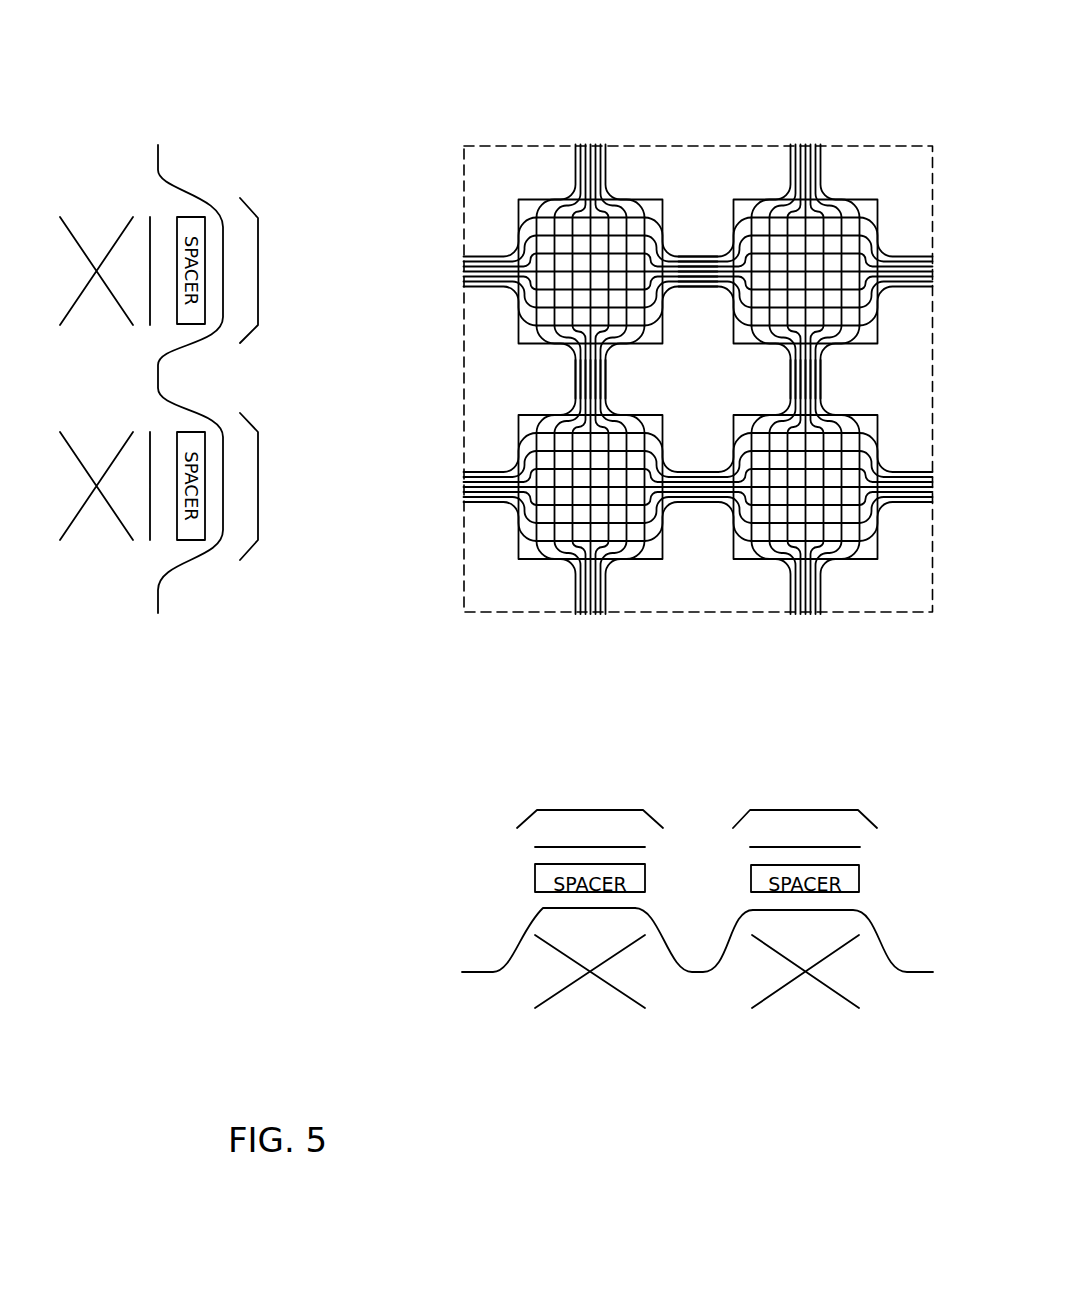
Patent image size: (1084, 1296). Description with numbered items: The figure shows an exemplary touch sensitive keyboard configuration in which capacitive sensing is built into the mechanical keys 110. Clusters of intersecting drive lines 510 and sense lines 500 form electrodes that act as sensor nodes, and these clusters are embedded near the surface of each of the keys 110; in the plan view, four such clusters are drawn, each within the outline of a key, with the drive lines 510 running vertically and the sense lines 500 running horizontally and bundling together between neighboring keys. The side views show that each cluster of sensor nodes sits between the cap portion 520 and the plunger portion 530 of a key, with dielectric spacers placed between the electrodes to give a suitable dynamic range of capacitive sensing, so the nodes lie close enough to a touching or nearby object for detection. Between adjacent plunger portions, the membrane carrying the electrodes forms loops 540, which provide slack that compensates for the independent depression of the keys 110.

The keys 110 is at (753, 199).
The sense lines 500 is at (442, 487).
The drive lines 510 is at (590, 122).
The cap portion 520 is at (447, 812).
The plunger portion 530 is at (447, 1008).
The loops 540 is at (698, 973).